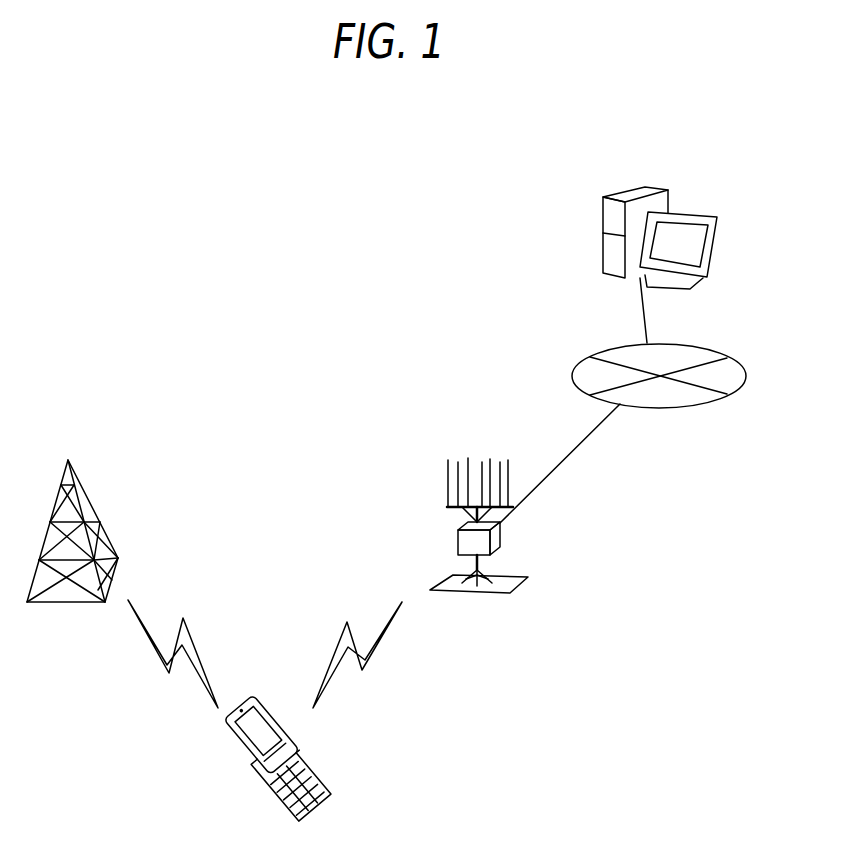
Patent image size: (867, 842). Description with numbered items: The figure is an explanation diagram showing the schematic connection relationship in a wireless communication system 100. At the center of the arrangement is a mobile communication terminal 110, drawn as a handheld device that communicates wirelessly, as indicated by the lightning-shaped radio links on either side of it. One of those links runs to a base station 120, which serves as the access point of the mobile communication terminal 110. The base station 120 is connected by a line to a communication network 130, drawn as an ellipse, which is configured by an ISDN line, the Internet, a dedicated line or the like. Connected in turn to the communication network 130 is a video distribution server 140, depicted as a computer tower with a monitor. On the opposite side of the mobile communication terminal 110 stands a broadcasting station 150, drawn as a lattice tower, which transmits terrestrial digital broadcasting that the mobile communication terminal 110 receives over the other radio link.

The wireless communication system 100 is at (199, 306).
The mobile communication terminal 110 is at (302, 752).
The base station 120 is at (500, 537).
The communication network 130 is at (600, 352).
The video distribution server 140 is at (658, 191).
The broadcasting station 150 is at (90, 503).